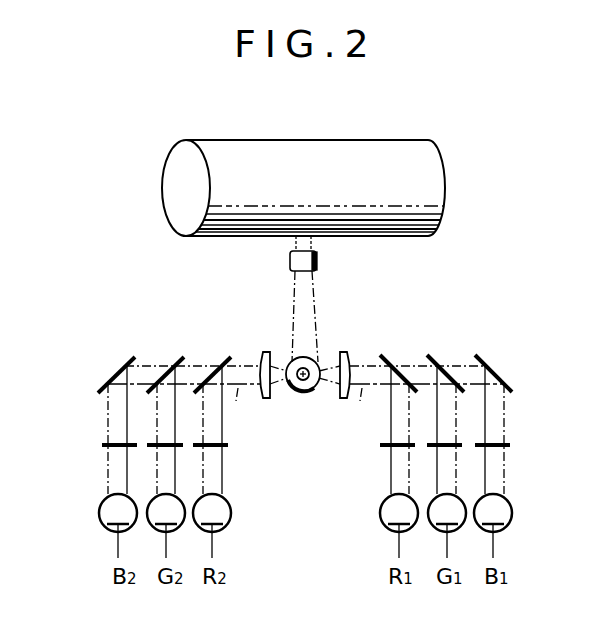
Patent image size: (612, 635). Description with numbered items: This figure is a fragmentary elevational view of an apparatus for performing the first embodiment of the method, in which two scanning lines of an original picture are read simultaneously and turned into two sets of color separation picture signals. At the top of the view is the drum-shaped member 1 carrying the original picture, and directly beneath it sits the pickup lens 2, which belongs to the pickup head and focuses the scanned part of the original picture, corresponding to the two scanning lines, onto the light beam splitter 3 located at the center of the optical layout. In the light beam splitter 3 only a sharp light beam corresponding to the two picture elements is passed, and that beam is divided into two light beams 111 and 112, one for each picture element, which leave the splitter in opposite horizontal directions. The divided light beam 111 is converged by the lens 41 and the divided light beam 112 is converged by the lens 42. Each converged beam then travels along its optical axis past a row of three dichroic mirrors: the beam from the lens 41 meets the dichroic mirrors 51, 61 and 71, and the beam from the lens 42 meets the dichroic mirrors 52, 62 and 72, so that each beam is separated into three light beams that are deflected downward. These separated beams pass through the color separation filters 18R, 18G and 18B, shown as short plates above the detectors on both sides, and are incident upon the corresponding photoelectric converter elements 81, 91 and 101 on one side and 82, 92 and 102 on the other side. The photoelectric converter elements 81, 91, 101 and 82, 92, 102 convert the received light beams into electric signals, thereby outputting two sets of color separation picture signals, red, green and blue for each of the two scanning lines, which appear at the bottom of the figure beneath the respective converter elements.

The cylindrical drum / document 1 is at (226, 236).
The pickup lens 2 is at (318, 263).
The light beam splitter 3 is at (303, 392).
The lens 41 is at (348, 358).
The lens 42 is at (264, 358).
The dichroic mirror 51 is at (385, 358).
The dichroic mirror 52 is at (224, 358).
The dichroic mirror 61 is at (432, 358).
The dichroic mirror 62 is at (177, 358).
The dichroic mirror 71 is at (480, 358).
The dichroic mirror 72 is at (128, 358).
The photoelectric converter element 81 is at (384, 525).
The photoelectric converter element 82 is at (226, 524).
The photoelectric converter element 91 is at (438, 525).
The photoelectric converter element 92 is at (151, 526).
The photoelectric converter element 101 is at (509, 522).
The photoelectric converter element 102 is at (100, 516).
The light beam 111 is at (369, 405).
The light beam 112 is at (243, 405).
The color separation filter 18B is at (104, 446).
The color separation filter 18G is at (147, 447).
The color separation filter 18R is at (226, 449).